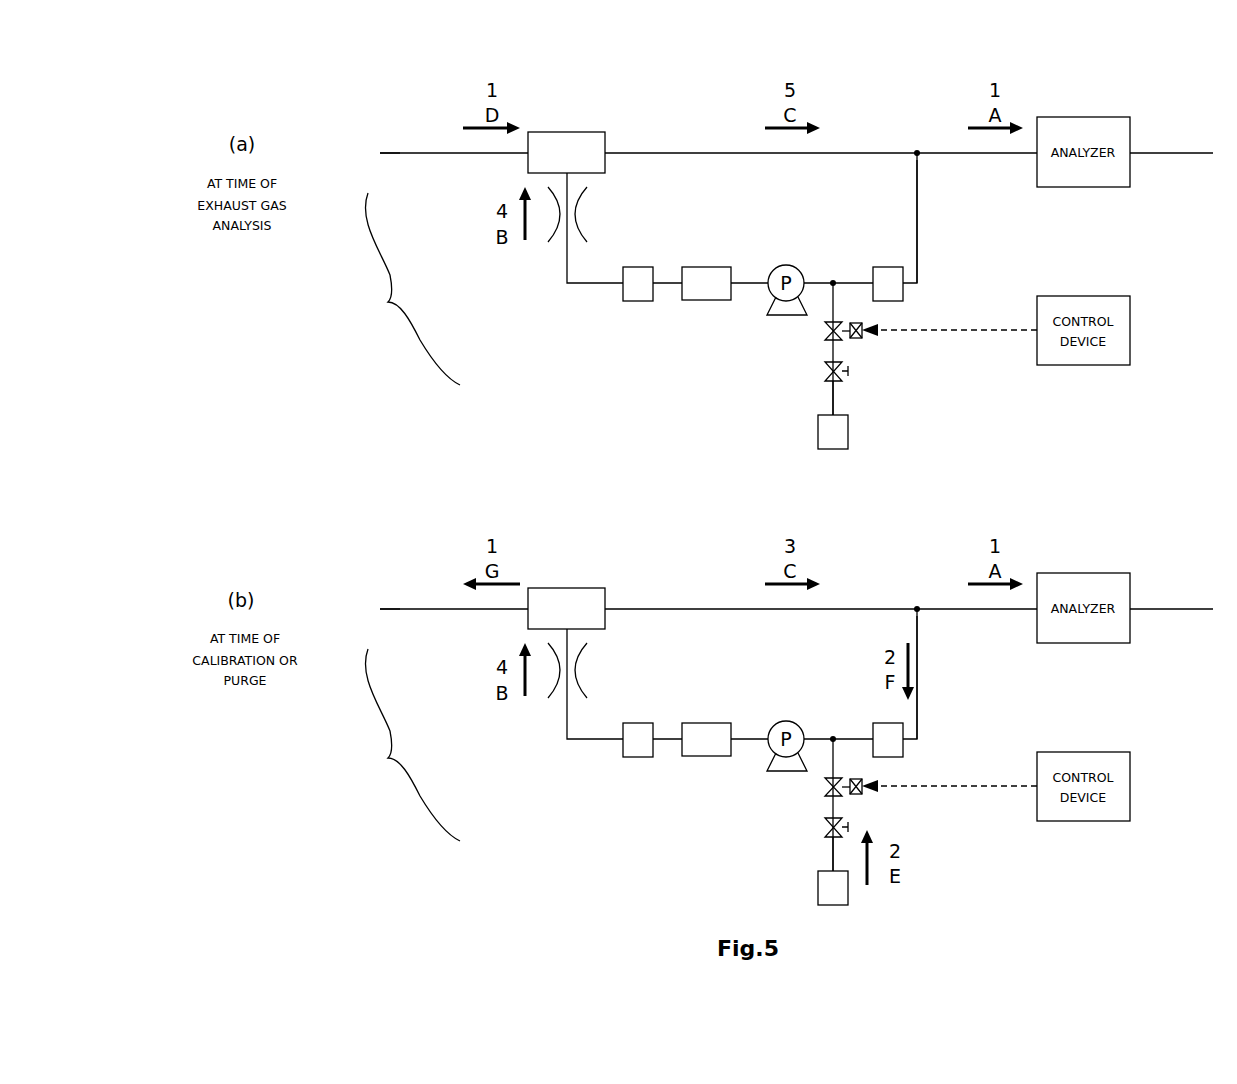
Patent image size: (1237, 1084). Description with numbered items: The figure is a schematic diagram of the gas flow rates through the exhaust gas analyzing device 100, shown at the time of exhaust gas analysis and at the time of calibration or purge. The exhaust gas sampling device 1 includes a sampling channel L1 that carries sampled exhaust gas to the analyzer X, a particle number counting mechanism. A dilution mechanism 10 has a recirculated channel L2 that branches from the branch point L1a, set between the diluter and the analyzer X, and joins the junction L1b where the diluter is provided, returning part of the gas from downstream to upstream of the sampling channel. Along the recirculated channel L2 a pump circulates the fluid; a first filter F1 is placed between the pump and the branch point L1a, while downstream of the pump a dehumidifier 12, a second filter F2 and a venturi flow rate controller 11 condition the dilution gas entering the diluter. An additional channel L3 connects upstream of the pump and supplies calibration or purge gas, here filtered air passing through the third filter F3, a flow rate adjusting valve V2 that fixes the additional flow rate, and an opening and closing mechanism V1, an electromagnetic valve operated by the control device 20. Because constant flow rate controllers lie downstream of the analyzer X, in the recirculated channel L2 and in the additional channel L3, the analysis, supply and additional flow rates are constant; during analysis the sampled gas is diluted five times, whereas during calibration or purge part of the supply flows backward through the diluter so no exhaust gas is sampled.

The exhaust gas analyzing device 100 is at (415, 108).
The exhaust gas sampling device 1 is at (412, 517).
The dilution mechanism 10 is at (533, 304).
The flow rate controller 11 is at (573, 212).
The dehumidifier 12 is at (705, 301).
The control device 20 is at (1078, 366).
The analyzer X is at (1083, 117).
The sampling channel L1 is at (403, 153).
The branch point L1a is at (917, 370).
The junction L1b is at (566, 380).
The recirculated channel L2 is at (917, 218).
The additional channel L3 is at (833, 400).
The opening and closing mechanism V1 is at (825, 331).
The flow rate adjusting valve V2 is at (825, 371).
The first filter F1 is at (888, 512).
The second filter F2 is at (638, 512).
The third filter F3 is at (833, 660).